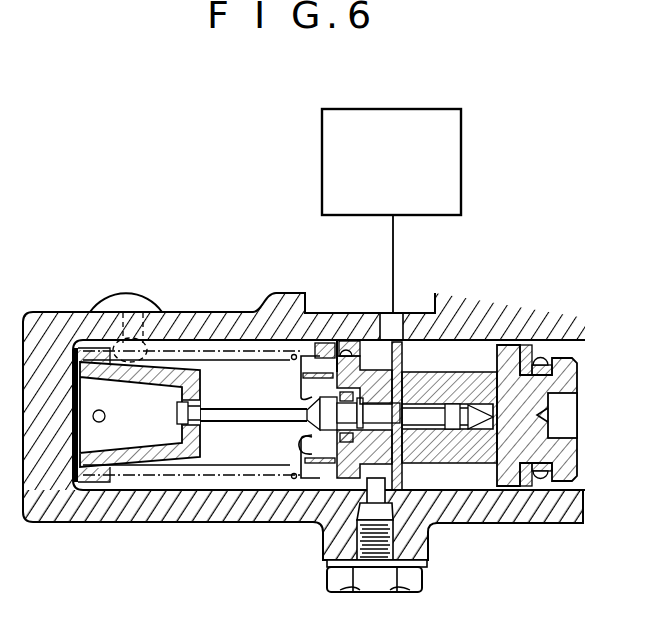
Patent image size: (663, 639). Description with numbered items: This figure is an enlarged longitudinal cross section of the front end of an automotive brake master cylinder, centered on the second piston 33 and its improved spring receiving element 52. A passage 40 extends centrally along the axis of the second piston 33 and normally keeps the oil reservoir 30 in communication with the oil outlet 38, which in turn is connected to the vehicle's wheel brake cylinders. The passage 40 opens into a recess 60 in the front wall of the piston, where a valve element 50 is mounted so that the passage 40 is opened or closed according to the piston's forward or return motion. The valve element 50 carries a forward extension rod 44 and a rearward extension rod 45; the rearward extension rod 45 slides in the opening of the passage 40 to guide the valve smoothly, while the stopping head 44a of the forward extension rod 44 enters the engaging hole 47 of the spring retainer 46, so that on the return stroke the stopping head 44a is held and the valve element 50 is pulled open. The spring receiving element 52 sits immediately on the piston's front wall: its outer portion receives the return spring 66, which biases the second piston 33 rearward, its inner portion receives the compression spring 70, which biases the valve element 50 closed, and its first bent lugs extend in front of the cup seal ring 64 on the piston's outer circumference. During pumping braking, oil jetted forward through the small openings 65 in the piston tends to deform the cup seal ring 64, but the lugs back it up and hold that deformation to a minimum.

The oil reservoir 30 is at (461, 165).
The second piston 33 is at (495, 505).
The oil outlet 38 is at (152, 292).
The passage 40 is at (415, 490).
The forward extension rod 44 is at (222, 440).
The stopping head 44a is at (185, 430).
The rearward extension rod 45 is at (455, 465).
The spring retainer 46 is at (127, 493).
The engaging hole 47 is at (207, 413).
The valve element 50 is at (328, 558).
The spring receiving element 52 is at (300, 440).
The recess 60 is at (295, 488).
The cup seal ring 64 is at (323, 343).
The small openings 65 is at (346, 343).
The return spring 66 is at (85, 495).
The compression spring 70 is at (303, 377).